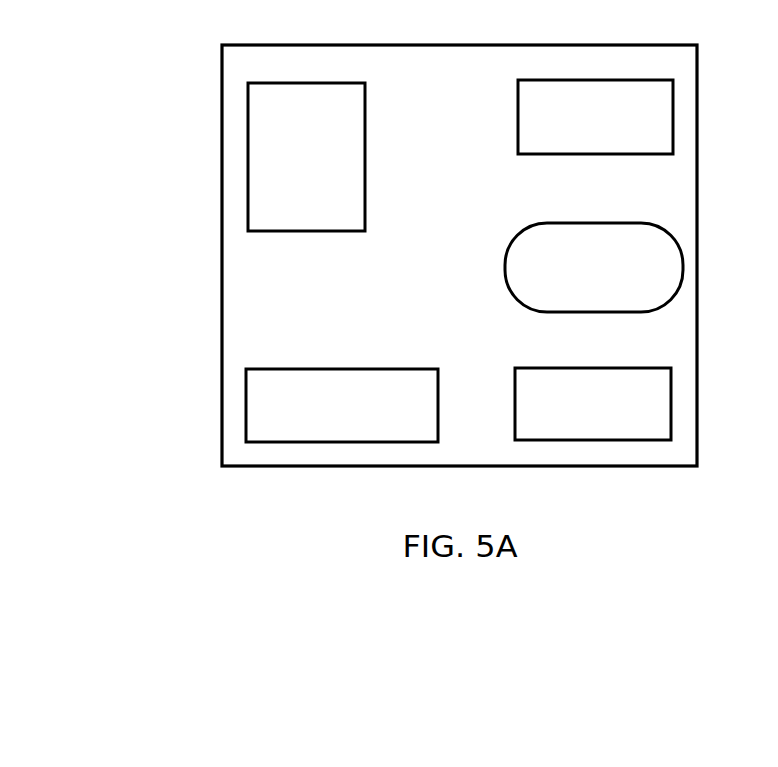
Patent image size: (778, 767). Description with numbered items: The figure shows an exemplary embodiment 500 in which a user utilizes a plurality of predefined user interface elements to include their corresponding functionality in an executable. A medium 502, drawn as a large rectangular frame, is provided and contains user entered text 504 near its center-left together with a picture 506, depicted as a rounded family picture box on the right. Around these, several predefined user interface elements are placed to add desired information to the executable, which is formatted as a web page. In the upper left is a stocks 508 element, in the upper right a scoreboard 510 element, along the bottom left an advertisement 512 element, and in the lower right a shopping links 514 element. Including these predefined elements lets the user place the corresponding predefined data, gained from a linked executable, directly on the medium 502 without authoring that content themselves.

The exemplary embodiment 500 is at (86, 312).
The medium 502 is at (462, 44).
The user entered text 504 is at (350, 292).
The picture 506 is at (518, 237).
The stocks 508 is at (365, 155).
The scoreboard 510 is at (518, 118).
The advertisement 512 is at (342, 368).
The shopping links 514 is at (592, 367).